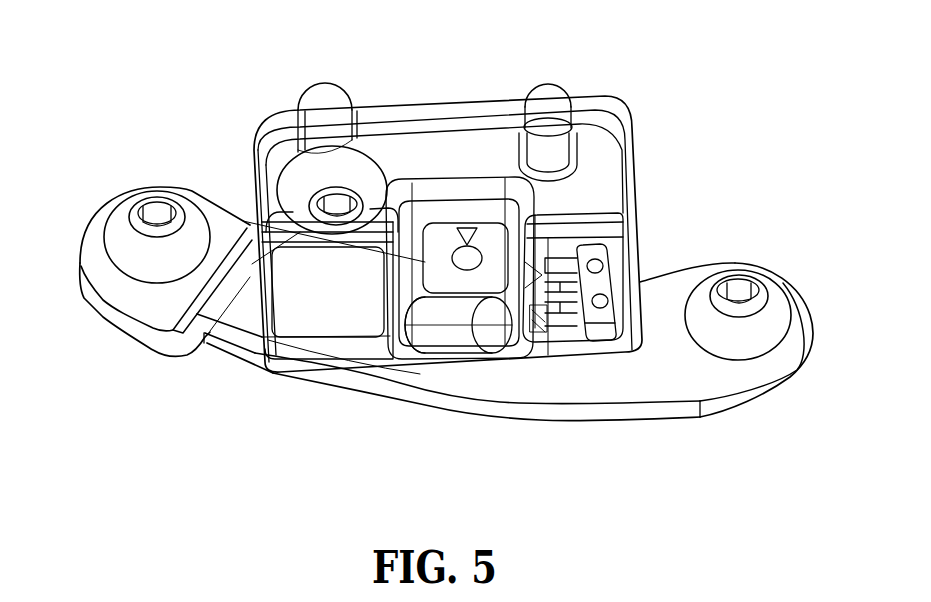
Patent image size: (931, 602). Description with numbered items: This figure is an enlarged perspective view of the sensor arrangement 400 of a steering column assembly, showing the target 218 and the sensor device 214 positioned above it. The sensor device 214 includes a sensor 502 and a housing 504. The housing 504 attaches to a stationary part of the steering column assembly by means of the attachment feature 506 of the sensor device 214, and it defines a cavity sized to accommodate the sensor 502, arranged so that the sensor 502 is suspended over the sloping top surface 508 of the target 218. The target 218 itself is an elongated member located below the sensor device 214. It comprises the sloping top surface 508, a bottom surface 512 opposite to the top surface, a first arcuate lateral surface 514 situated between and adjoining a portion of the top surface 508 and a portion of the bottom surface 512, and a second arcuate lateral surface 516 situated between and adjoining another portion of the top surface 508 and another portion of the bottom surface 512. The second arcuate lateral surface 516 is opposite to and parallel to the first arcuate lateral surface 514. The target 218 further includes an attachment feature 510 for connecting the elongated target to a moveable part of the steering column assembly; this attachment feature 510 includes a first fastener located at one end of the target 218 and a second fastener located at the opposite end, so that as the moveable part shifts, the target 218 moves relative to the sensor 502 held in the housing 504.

The mounting assembly 400 is at (178, 85).
The sensor device 214 is at (606, 145).
The target 218 is at (670, 291).
The sensor 502 is at (441, 330).
The housing 504 is at (450, 128).
The attachment feature 506 is at (318, 113).
The sloping top surface 508 is at (620, 390).
The attachment feature 510 is at (118, 253).
The bottom surface 512 is at (230, 418).
The first arcuate lateral surface 514 is at (773, 383).
The second arcuate lateral surface 516 is at (165, 158).